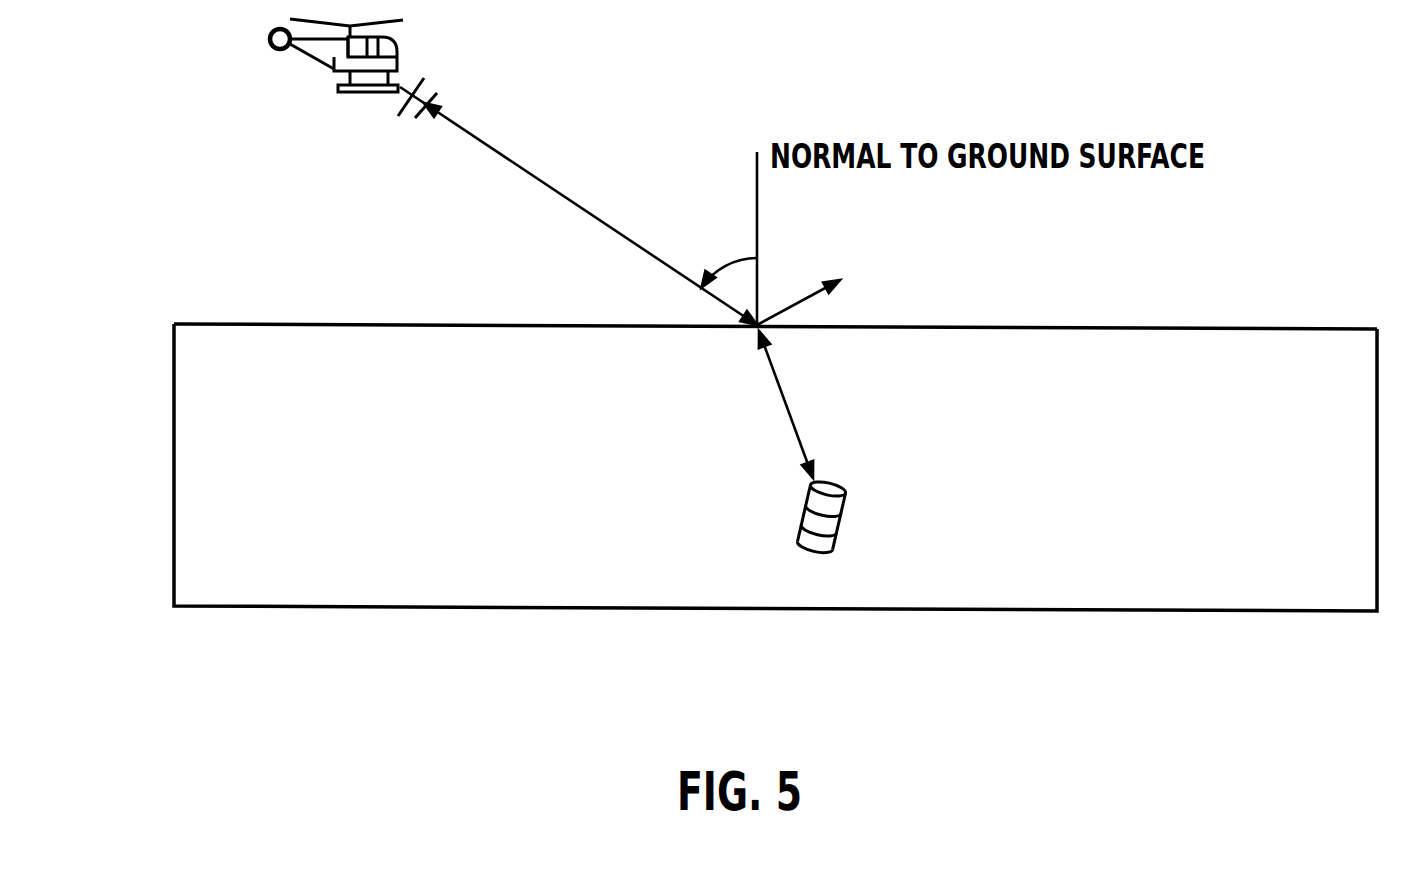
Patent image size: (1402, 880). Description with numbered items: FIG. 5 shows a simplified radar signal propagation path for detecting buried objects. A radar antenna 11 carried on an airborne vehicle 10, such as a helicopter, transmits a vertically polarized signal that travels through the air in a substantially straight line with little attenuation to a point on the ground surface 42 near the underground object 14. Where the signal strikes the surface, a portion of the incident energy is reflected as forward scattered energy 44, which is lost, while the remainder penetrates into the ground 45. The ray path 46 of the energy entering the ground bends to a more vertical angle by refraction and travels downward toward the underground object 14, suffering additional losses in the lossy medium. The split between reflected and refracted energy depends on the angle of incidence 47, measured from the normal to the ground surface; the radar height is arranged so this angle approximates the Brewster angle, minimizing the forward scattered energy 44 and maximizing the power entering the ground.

The airborne vehicle 10 is at (239, 106).
The radar antenna 11 is at (561, 82).
The underground object 14 is at (962, 514).
The ground surface 42 is at (775, 306).
The forward scattered energy 44 is at (1041, 297).
The ground 45 is at (626, 428).
The ray path 46 is at (998, 404).
The angle of incidence 47 is at (719, 210).